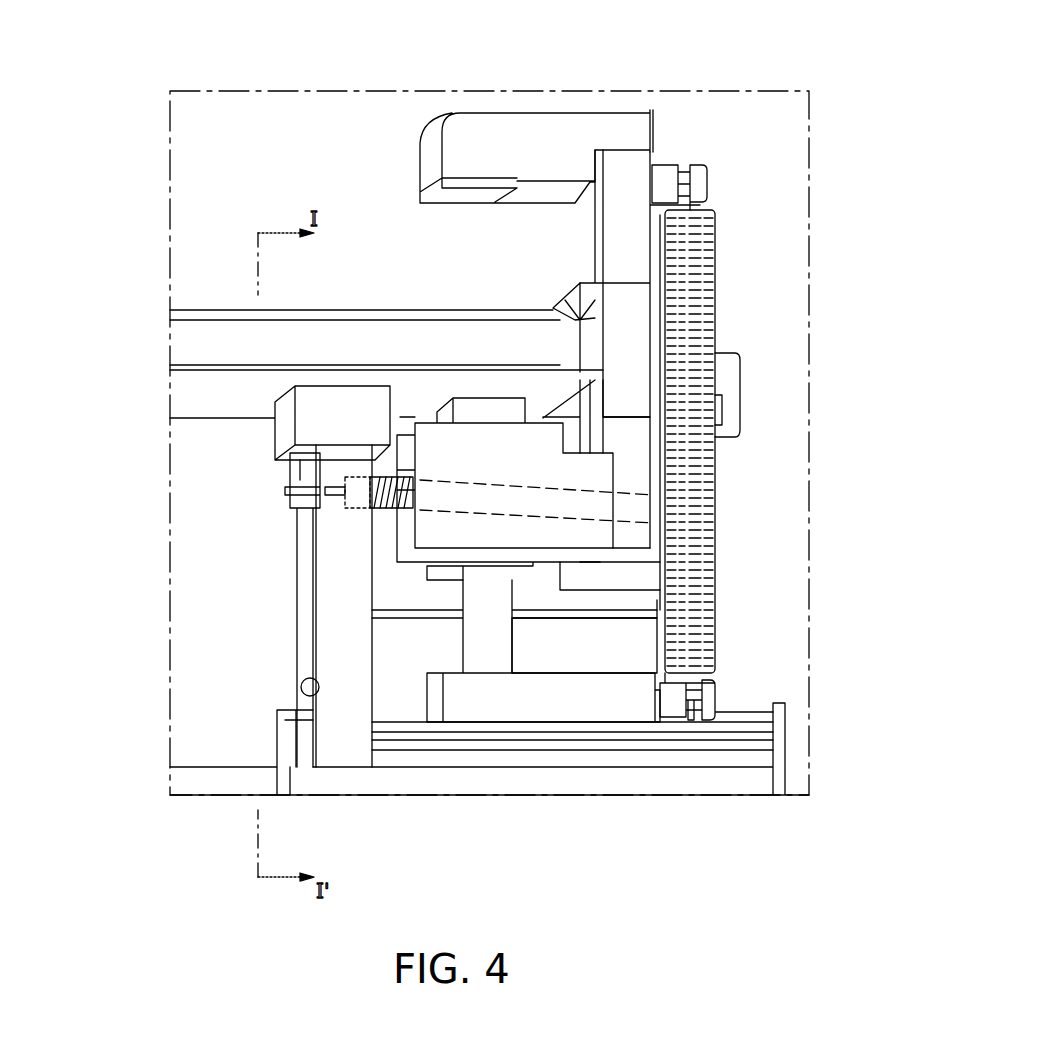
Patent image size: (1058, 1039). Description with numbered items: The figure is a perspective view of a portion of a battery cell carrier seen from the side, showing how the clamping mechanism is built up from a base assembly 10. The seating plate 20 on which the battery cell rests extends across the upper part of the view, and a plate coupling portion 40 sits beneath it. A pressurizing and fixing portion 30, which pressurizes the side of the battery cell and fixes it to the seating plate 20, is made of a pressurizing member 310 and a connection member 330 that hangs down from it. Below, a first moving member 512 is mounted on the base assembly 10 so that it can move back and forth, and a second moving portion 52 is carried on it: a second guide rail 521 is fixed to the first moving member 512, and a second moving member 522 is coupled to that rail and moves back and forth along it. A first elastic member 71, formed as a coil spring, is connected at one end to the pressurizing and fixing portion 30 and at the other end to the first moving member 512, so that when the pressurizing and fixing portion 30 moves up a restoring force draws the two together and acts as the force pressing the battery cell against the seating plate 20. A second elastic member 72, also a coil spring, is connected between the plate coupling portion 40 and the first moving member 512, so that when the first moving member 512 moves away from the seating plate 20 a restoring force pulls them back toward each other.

The base assembly 10 is at (708, 776).
The seating plate 20 is at (190, 336).
The pressurizing and fixing portion 30 is at (880, 118).
The pressurizing member 310 is at (637, 131).
The connection member 330 is at (633, 172).
The plate coupling portion 40 is at (332, 522).
The second moving portion 52 is at (68, 655).
The second guide rail 521 is at (475, 652).
The second moving member 522 is at (450, 532).
The first moving member 512 is at (580, 647).
The first elastic member 71 is at (693, 303).
The second elastic member 72 is at (298, 540).